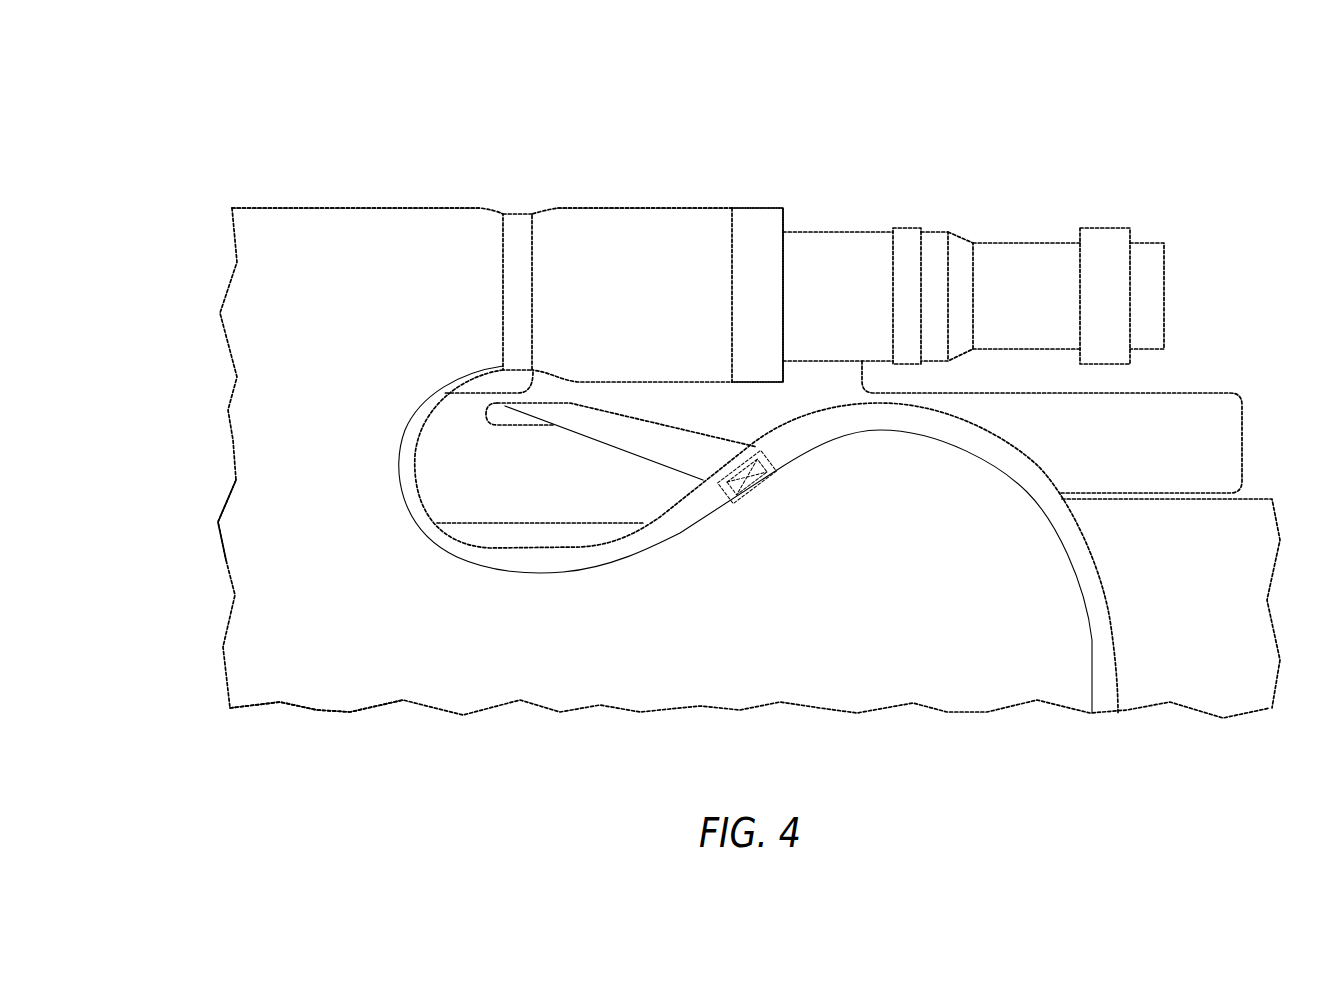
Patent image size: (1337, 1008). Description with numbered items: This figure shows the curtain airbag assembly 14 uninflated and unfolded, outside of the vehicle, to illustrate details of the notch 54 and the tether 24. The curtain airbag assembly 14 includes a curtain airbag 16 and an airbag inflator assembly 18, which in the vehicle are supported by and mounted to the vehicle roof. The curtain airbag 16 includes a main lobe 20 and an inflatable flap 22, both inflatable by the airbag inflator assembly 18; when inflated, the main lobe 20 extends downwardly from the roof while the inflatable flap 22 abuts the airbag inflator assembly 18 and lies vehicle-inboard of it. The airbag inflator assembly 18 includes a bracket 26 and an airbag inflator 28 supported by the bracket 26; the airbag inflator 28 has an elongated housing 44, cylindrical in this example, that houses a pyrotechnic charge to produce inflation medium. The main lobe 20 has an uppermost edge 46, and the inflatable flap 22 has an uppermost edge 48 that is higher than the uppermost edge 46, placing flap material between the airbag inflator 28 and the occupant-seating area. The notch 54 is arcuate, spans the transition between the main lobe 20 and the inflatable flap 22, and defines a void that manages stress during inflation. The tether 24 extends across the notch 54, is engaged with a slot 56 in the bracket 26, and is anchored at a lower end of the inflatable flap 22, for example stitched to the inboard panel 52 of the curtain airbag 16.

The curtain airbag assembly 14 is at (420, 136).
The curtain airbag 16 is at (277, 590).
The airbag inflator assembly 18 is at (738, 188).
The main lobe 20 is at (273, 512).
The inflatable flap 22 is at (1040, 498).
The tether 24 is at (650, 440).
The bracket 26 is at (1208, 392).
The airbag inflator 28 is at (605, 218).
The housing 44 is at (853, 232).
The uppermost edge 46 is at (337, 208).
The uppermost edge 48 is at (973, 540).
The inboard panel 52 is at (338, 683).
The notch 54 is at (537, 505).
The slot 56 is at (490, 425).